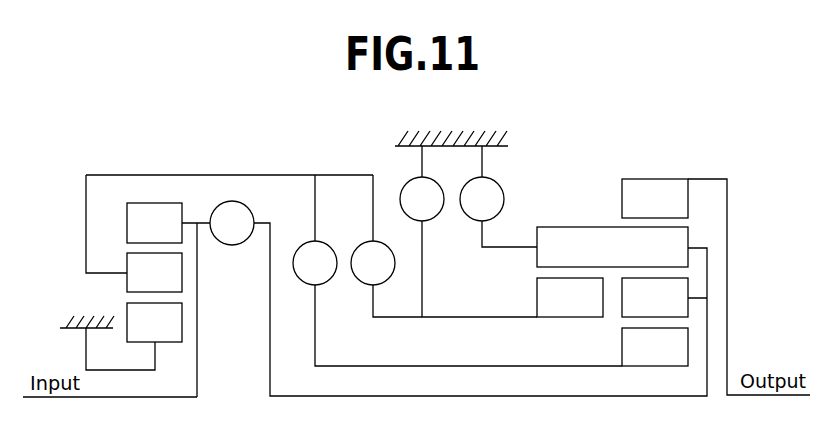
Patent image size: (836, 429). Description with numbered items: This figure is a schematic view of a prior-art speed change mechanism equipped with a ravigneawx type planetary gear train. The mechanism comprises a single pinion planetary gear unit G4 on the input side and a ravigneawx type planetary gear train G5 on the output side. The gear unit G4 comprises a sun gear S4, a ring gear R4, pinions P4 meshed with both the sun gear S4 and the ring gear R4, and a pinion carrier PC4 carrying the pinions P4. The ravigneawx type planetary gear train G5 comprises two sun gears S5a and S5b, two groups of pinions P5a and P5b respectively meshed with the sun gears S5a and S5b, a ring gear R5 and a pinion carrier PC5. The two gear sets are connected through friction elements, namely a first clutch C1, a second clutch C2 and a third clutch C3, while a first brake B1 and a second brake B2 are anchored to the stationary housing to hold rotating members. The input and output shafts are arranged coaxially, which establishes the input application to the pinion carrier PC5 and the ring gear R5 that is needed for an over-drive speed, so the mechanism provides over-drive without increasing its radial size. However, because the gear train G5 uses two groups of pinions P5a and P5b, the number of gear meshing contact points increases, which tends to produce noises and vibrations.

The single pinion planetary gear unit G4 is at (166, 186).
The ring gear R4 is at (154, 223).
The pinions P4 is at (154, 272).
The pinion carrier PC4 is at (120, 274).
The sun gear S4 is at (154, 322).
The third clutch C3 is at (232, 223).
The second clutch C2 is at (315, 263).
The first clutch C1 is at (373, 263).
The second brake B2 is at (422, 199).
The first brake B1 is at (482, 199).
The ravigneawx type planetary gear train G5 is at (605, 166).
The ring gear R5 is at (655, 198).
The pinions P5a is at (612, 247).
The pinions P5b is at (655, 297).
The pinion carrier PC5 is at (708, 264).
The sun gear S5a is at (570, 297).
The sun gear S5b is at (655, 347).